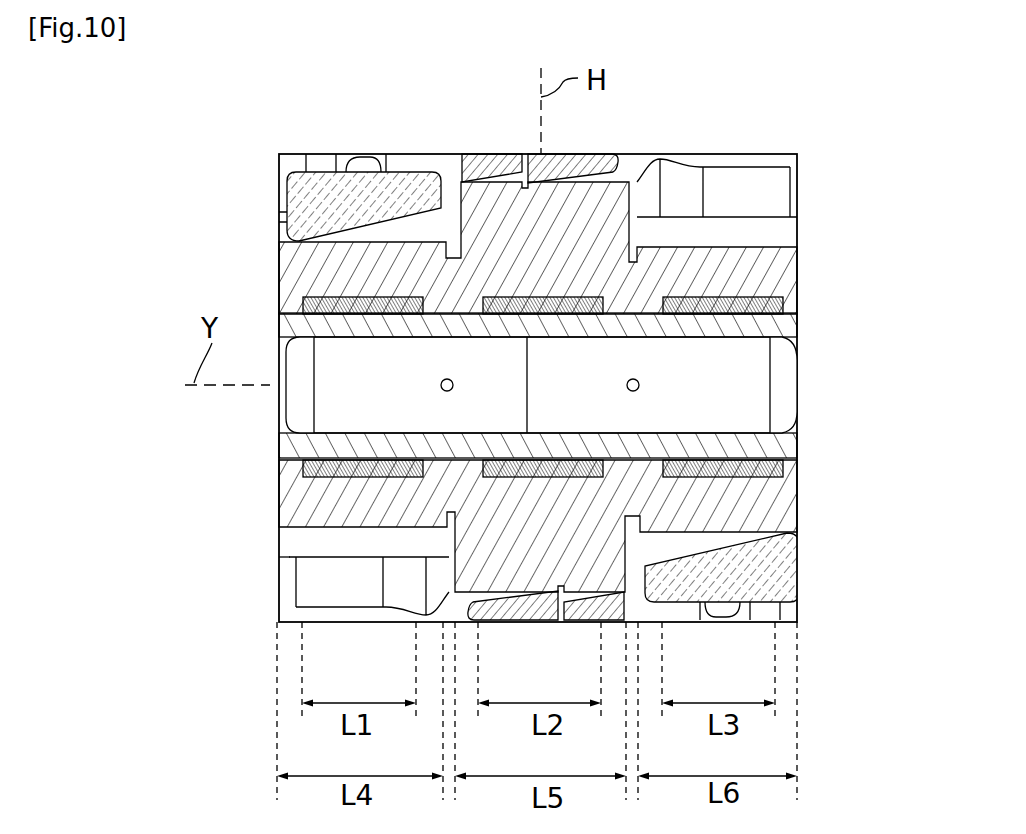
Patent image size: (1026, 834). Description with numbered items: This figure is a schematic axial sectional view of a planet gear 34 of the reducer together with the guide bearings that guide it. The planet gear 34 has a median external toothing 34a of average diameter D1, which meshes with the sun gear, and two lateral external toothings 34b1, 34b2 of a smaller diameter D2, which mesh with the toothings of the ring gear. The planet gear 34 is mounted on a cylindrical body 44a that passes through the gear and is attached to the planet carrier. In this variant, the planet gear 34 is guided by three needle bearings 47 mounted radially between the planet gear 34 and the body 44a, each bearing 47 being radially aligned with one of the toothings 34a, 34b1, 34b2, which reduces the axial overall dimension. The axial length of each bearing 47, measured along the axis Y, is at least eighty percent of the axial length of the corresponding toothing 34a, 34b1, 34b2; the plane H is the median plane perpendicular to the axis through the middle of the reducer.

The planet gear 34 is at (537, 362).
The median external toothing 34a is at (619, 156).
The lateral external toothing 34b1 is at (412, 228).
The lateral external toothing 34b2 is at (741, 222).
The cylindrical body 44a is at (799, 402).
The needle bearing 47 is at (750, 294).